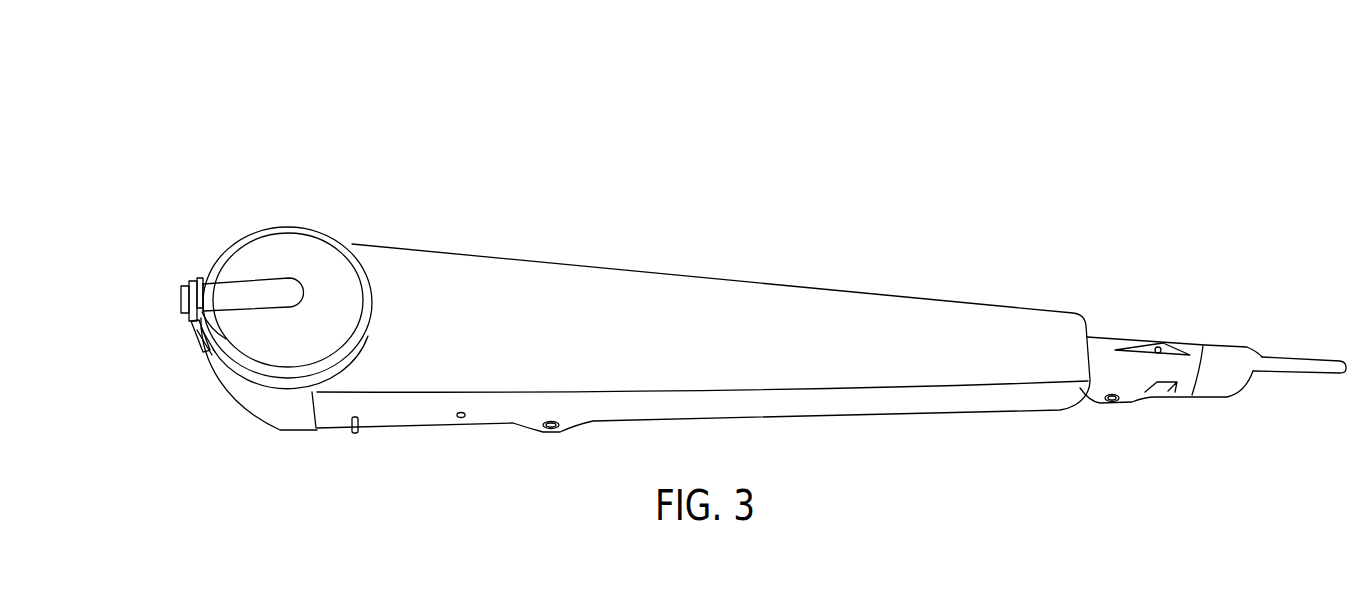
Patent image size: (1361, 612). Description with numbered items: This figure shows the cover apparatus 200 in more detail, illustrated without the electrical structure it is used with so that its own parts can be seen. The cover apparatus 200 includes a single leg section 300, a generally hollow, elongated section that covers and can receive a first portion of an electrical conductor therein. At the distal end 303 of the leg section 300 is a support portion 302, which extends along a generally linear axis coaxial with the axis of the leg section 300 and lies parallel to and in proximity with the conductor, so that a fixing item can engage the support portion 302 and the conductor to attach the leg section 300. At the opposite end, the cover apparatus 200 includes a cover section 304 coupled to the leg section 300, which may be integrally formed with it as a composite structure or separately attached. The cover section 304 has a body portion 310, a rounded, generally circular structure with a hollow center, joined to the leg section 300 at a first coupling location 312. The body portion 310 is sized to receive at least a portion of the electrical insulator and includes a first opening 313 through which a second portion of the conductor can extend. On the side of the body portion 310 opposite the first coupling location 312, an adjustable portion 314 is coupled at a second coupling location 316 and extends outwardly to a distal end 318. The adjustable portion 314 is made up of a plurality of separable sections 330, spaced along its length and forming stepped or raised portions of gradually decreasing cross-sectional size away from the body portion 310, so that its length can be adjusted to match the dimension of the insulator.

The cover apparatus 200 is at (104, 75).
The leg section 300 is at (693, 277).
The support portion 302 is at (1304, 360).
The distal end 303 is at (1229, 390).
The cover section 304 is at (220, 172).
The body portion 310 is at (273, 372).
The first coupling location 312 is at (358, 252).
The first opening 313 is at (211, 355).
The adjustable portion 314 is at (180, 311).
The second coupling location 316 is at (203, 277).
The distal end 318 is at (181, 298).
The separable sections 330 is at (200, 278).